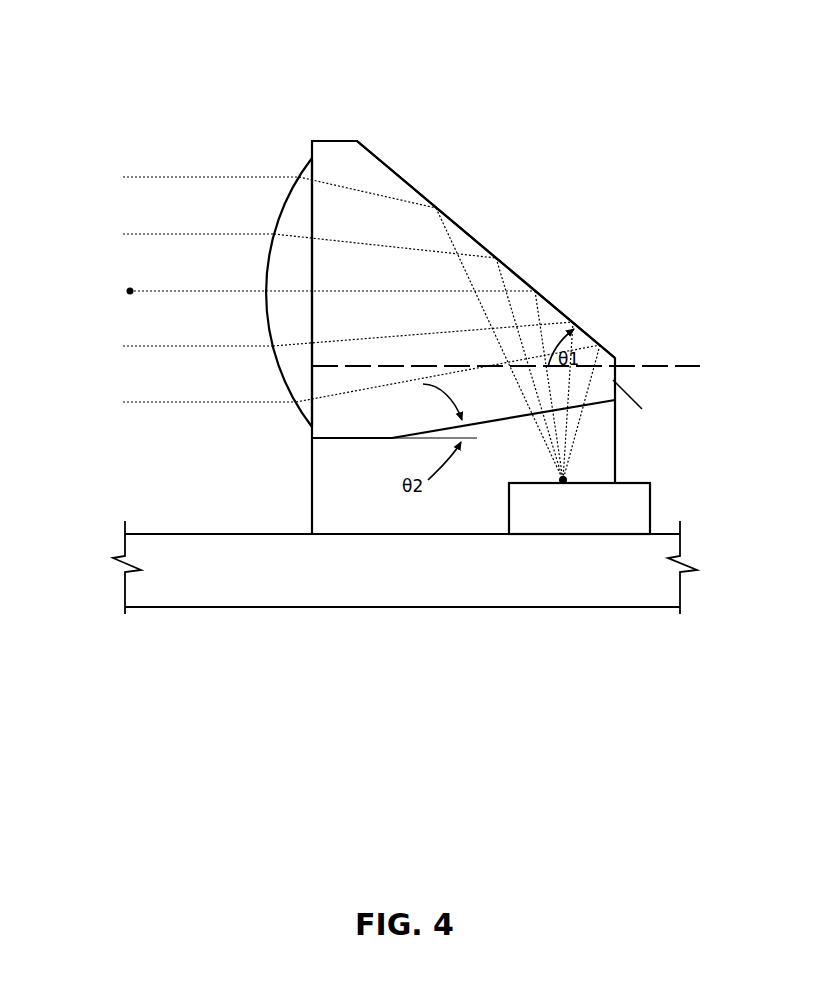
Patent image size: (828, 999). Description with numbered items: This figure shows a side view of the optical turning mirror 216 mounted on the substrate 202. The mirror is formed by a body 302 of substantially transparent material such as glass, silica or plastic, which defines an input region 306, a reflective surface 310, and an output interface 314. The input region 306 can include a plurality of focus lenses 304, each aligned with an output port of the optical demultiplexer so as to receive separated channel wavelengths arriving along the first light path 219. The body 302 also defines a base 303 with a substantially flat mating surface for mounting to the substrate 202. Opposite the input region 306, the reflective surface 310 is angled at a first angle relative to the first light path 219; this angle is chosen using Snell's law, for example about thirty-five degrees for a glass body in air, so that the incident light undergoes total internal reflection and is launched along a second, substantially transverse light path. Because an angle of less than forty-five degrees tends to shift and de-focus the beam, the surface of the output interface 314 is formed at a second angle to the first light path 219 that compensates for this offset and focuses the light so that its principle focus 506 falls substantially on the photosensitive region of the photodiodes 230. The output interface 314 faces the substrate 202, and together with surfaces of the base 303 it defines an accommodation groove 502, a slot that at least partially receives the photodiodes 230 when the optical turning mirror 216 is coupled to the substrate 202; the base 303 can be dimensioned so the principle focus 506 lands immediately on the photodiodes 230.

The optical turning mirror 216 is at (163, 124).
The body 302 is at (463, 337).
The base 303 is at (328, 492).
The focus lenses 304 is at (289, 292).
The input region 306 is at (312, 373).
The reflective surface 310 is at (546, 322).
The output interface 314 is at (549, 408).
The first light path 219 is at (128, 292).
The accommodation groove 502 is at (566, 481).
The principle focus 506 is at (546, 483).
The photodiodes 230 is at (579, 508).
The substrate 202 is at (405, 567).